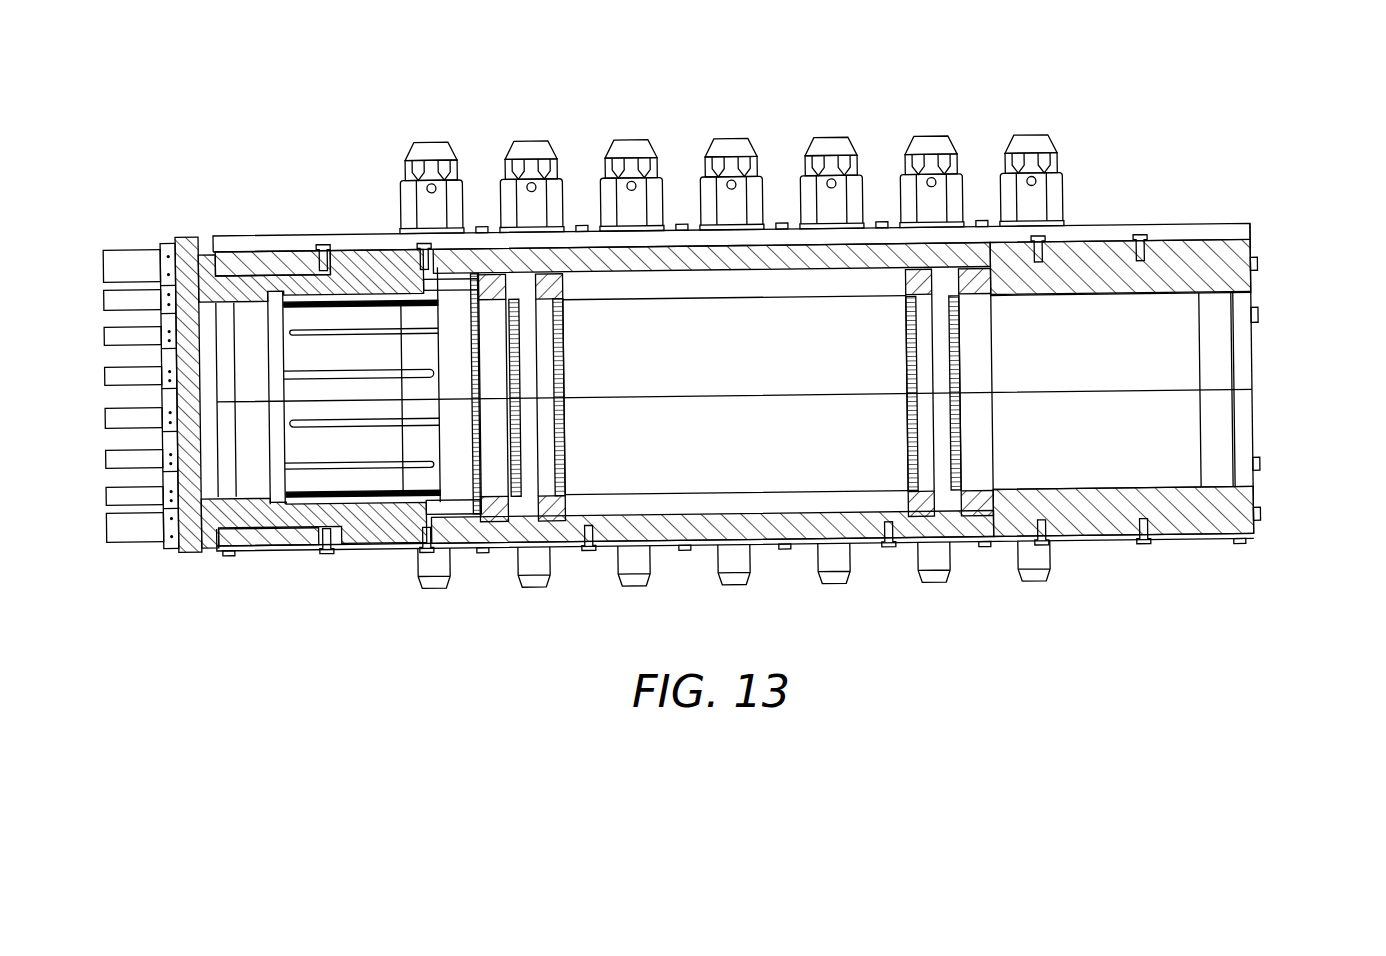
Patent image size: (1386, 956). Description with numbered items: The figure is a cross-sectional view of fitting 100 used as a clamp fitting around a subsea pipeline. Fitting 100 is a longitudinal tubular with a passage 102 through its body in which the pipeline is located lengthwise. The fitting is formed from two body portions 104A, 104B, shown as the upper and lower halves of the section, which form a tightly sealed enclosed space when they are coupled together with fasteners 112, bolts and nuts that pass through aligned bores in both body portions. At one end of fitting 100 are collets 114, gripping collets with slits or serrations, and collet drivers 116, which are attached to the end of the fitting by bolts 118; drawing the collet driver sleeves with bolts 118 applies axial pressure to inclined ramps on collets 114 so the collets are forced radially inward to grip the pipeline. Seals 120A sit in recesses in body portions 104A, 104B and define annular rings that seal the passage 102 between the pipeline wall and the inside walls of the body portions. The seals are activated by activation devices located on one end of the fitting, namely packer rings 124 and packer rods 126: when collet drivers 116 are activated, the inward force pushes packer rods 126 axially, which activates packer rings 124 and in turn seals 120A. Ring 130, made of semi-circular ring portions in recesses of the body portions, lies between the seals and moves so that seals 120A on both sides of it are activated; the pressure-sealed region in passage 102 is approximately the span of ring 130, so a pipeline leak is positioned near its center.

The fitting 100 is at (1134, 105).
The passage 102 is at (766, 434).
The body portion 104A is at (1250, 235).
The body portion 104B is at (1250, 535).
The fasteners 112 is at (838, 583).
The collets 114 is at (347, 480).
The collet drivers 116 is at (188, 552).
The bolts 118 is at (128, 547).
The seals 120A is at (545, 352).
The packer rings 124 is at (493, 515).
The packer rods 126 is at (447, 508).
The ring 130 is at (772, 297).